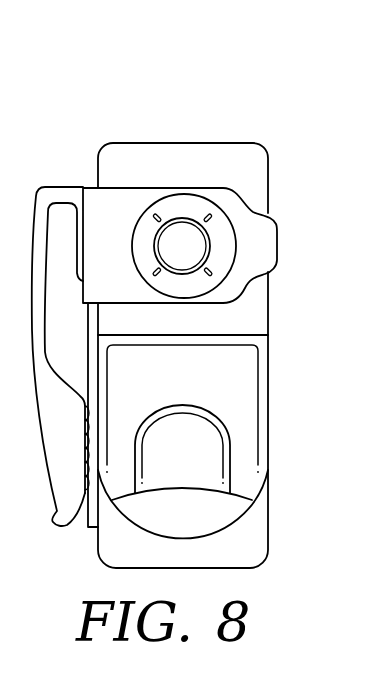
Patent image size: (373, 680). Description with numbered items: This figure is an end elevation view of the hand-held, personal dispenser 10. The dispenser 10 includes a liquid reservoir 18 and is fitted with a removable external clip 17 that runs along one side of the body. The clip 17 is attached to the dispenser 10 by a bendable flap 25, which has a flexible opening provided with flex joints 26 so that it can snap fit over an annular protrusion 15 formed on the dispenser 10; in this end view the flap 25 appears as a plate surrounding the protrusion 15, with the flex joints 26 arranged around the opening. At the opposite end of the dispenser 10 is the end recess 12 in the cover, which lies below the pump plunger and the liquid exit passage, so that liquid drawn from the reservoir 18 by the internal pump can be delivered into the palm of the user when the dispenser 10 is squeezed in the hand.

The personal dispenser 10 is at (184, 292).
The end recess 12 is at (194, 500).
The annular protrusion 15 is at (189, 254).
The external clip 17 is at (36, 207).
The liquid reservoir 18 is at (225, 162).
The bendable flap 25 is at (277, 232).
The flex joint 26 is at (163, 218).